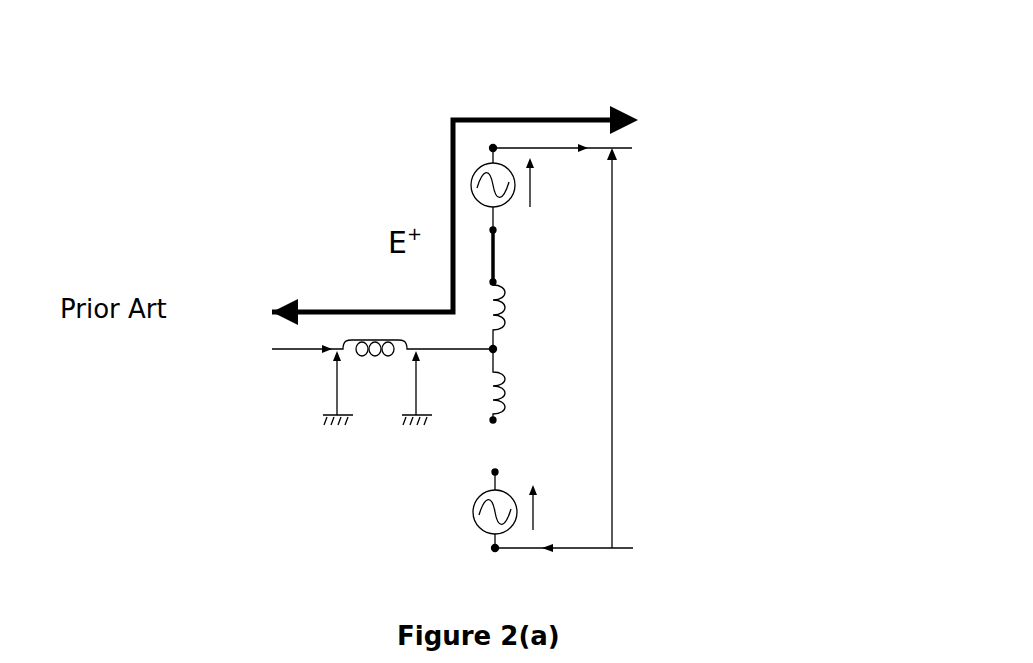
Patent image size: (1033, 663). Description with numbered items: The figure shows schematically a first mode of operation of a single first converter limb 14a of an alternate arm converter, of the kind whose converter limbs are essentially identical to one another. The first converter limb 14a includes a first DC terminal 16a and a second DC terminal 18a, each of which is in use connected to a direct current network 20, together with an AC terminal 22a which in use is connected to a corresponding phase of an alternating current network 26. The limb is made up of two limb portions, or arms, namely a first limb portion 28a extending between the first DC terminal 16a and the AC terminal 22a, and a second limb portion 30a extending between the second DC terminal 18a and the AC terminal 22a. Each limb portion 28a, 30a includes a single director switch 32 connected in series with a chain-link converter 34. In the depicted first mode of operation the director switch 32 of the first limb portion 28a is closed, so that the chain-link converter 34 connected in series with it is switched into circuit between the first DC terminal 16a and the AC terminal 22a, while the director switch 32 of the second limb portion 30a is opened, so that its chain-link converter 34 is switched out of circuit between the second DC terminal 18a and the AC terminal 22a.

The first converter limb 14a is at (614, 88).
The first DC terminal 16a is at (492, 147).
The second DC terminal 18a is at (494, 549).
The direct current network 20 is at (625, 318).
The AC terminal 22a is at (500, 345).
The alternating current network 26 is at (272, 350).
The first limb portion 28a is at (565, 227).
The second limb portion 30a is at (588, 447).
The director switch 32 is at (496, 259).
The chain-link converter 34 is at (474, 172).